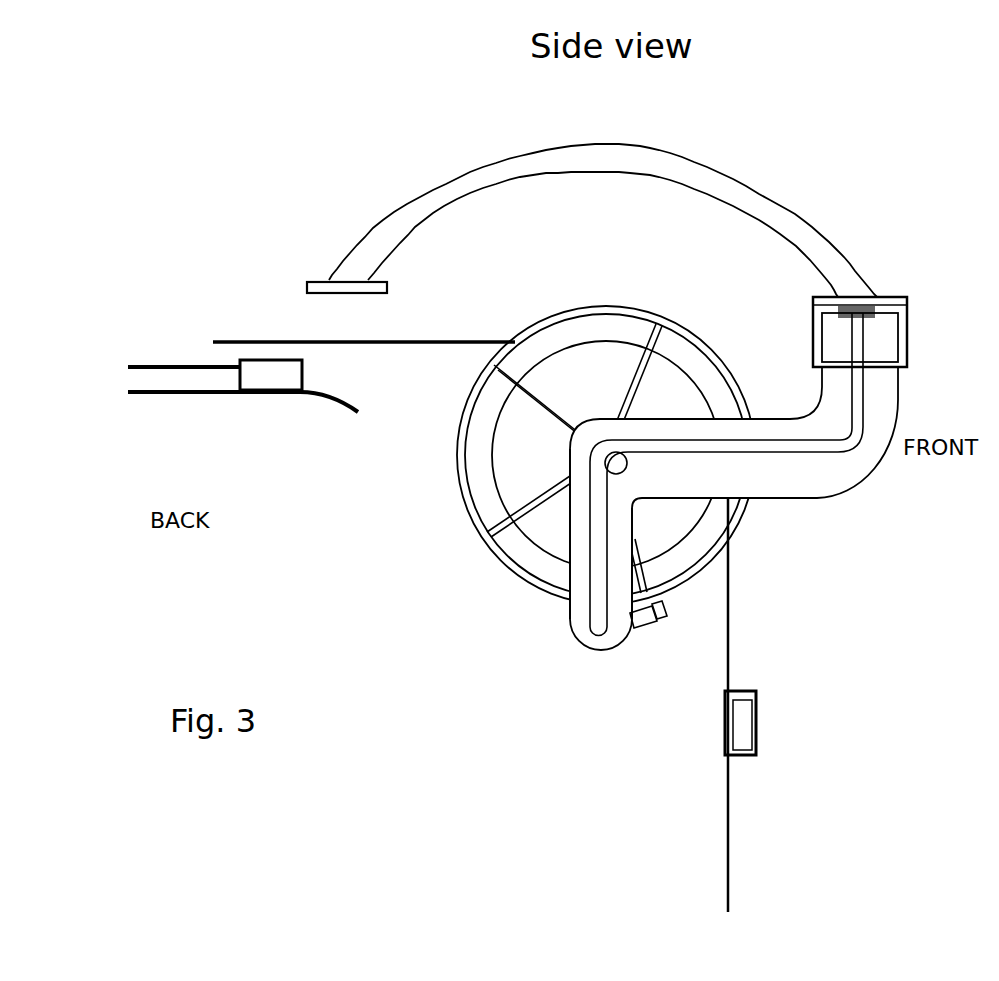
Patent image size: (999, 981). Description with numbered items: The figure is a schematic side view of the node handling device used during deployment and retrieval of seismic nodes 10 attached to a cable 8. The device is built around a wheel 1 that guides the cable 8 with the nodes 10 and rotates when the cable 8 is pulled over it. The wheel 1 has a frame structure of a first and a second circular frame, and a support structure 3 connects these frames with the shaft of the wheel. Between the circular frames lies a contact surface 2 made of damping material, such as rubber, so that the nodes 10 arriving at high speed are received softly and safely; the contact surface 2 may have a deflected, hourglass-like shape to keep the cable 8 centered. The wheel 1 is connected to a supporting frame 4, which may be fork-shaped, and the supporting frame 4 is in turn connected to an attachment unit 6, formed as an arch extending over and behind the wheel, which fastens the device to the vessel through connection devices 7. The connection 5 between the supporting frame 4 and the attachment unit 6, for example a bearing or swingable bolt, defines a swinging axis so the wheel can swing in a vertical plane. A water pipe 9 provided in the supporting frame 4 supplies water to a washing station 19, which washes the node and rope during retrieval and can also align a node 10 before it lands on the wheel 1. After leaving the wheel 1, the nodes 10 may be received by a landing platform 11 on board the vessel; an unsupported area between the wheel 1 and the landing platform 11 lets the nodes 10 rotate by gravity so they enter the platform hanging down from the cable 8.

The wheel 1 is at (606, 455).
The contact surface 2 is at (593, 358).
The support structure 3 is at (557, 490).
The supporting frame 4 is at (767, 472).
The connection 5 is at (852, 365).
The attachment unit 6 is at (793, 288).
The connection device 7 is at (300, 285).
The cable 8 is at (493, 367).
The water pipe 9 is at (603, 550).
The node 10 is at (263, 377).
The landing platform 11 is at (218, 400).
The washing station 19 is at (650, 600).